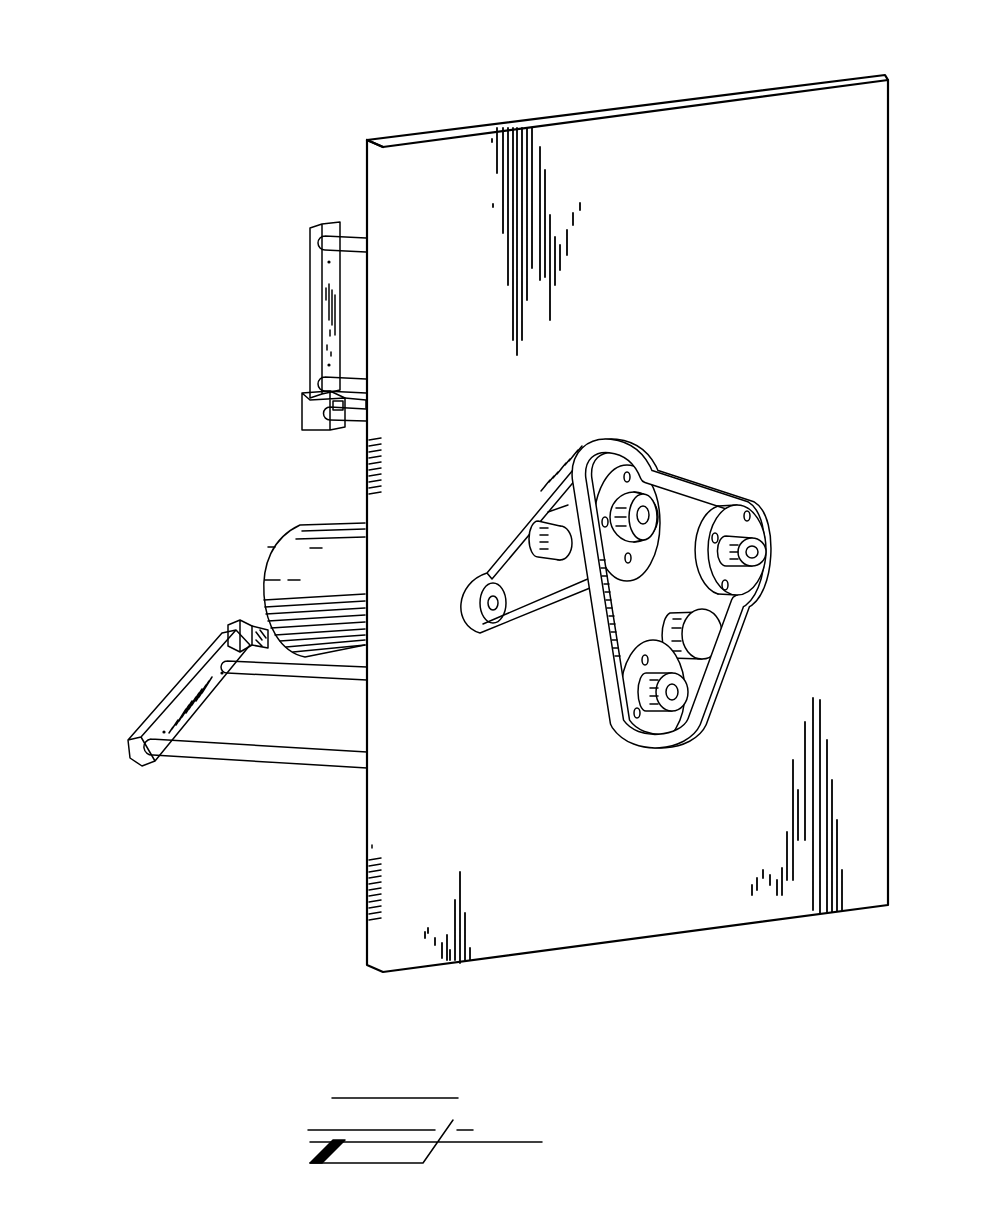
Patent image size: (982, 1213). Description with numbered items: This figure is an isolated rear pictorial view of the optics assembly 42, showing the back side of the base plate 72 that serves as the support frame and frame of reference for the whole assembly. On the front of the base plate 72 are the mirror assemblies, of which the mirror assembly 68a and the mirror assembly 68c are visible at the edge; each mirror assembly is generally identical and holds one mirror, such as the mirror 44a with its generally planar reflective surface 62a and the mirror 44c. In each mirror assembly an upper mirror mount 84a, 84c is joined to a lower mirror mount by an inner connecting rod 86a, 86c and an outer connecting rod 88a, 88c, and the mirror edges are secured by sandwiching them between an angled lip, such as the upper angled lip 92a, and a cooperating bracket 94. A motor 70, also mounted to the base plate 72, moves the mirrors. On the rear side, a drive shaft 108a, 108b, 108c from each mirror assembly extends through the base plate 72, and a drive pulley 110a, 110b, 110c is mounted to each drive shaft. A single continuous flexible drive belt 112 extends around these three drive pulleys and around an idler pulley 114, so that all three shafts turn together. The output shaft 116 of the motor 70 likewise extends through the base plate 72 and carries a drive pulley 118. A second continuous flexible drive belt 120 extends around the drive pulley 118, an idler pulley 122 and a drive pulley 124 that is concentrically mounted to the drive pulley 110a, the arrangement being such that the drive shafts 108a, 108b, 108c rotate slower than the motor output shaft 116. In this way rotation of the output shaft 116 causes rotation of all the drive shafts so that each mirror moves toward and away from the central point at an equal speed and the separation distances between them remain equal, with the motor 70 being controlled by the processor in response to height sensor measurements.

The optics assembly 42 is at (305, 103).
The mirror 44a is at (360, 405).
The mirror 44c is at (265, 628).
The reflective surface 62a is at (353, 418).
The mirror assembly 68a is at (271, 259).
The mirror assembly 68c is at (96, 697).
The motor 70 is at (300, 522).
The base plate 72 is at (700, 222).
The upper mirror mount 84a is at (310, 297).
The upper mirror mount 84c is at (187, 680).
The inner connecting rod 86a is at (352, 374).
The inner connecting rod 86c is at (338, 670).
The outer connecting rod 88a is at (342, 237).
The outer connecting rod 88c is at (210, 748).
The upper angled lip 92a is at (312, 430).
The bracket 94 is at (310, 393).
The drive shaft 108a is at (645, 508).
The drive shaft 108b is at (752, 553).
The drive shaft 108c is at (677, 690).
The drive pulley 110a is at (648, 472).
The drive pulley 110b is at (765, 515).
The drive pulley 110c is at (653, 728).
The drive belt 112 is at (730, 505).
The idler pulley 114 is at (713, 630).
The output shaft 116 is at (487, 603).
The drive pulley 118 is at (490, 578).
The drive belt 120 is at (552, 510).
The idler pulley 122 is at (523, 547).
The drive pulley 124 is at (612, 457).